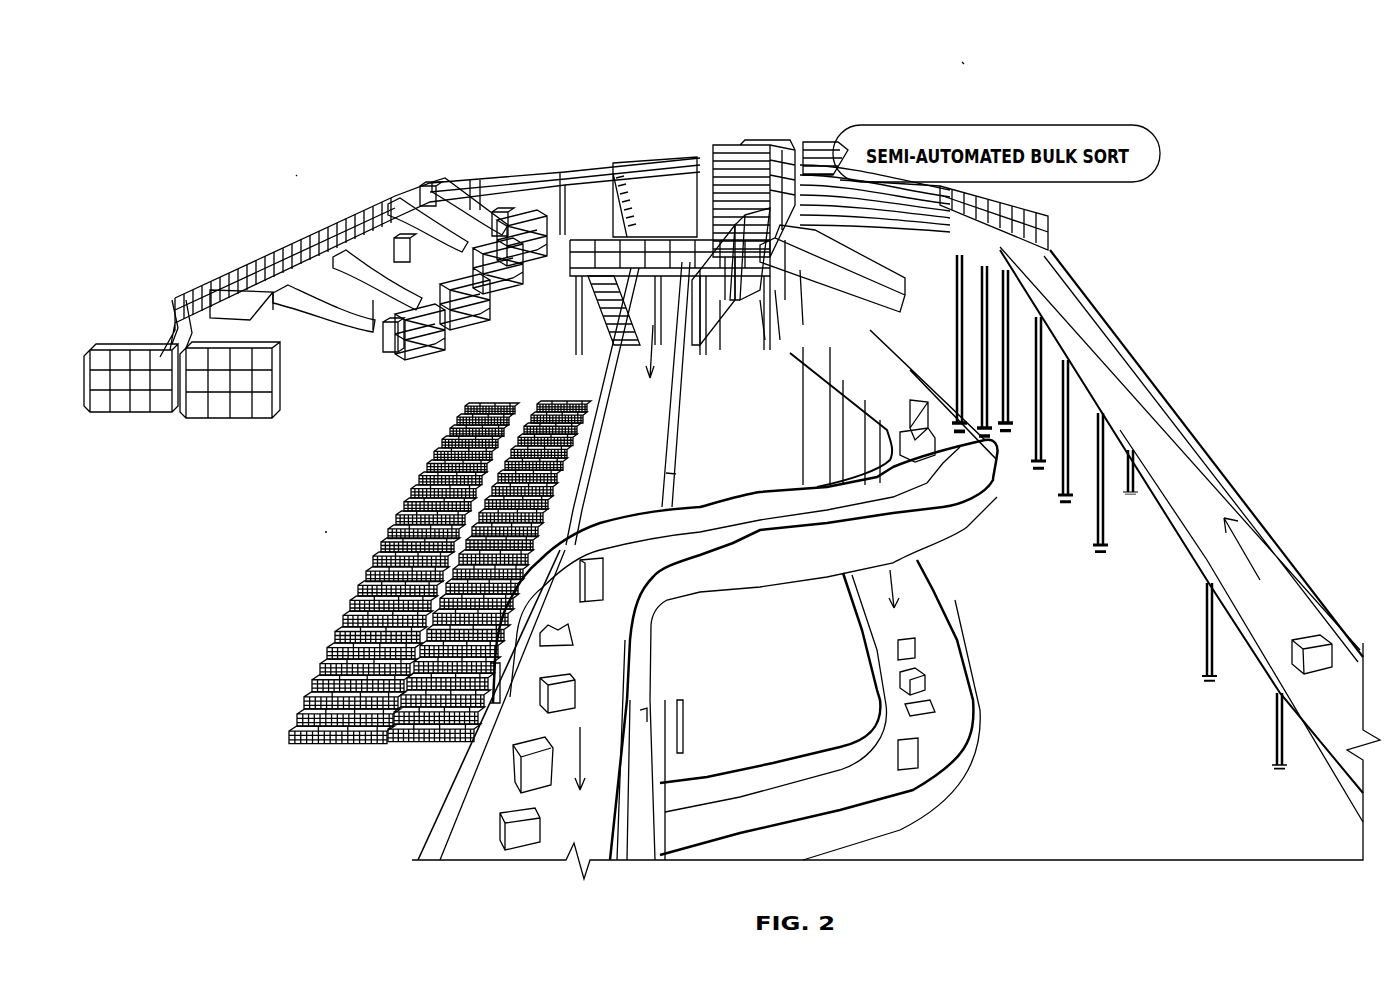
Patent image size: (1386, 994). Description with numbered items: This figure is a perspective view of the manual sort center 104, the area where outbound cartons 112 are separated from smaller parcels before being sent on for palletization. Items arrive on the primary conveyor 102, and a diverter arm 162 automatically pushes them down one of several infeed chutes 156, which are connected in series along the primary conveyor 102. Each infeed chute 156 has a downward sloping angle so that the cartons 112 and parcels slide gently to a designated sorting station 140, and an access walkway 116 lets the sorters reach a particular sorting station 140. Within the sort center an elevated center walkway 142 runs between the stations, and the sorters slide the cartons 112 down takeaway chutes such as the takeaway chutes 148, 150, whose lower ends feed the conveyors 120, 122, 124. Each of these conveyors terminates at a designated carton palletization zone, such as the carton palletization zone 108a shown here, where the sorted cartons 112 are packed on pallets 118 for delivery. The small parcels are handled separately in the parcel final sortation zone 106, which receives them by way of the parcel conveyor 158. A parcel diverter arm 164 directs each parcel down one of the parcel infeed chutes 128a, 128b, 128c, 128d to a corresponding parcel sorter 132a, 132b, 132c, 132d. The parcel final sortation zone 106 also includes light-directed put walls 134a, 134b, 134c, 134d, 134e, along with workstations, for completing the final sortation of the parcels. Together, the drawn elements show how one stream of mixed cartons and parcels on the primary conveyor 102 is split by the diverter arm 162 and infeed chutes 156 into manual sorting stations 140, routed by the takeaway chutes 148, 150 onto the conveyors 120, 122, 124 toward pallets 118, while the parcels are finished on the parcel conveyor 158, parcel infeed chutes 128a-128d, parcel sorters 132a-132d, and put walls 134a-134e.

The primary conveyor 102 is at (1237, 532).
The manual sort center 104 is at (974, 60).
The parcel final sortation zone 106 is at (290, 167).
The carton palletization zone 108a is at (316, 538).
The carton 112 is at (1307, 634).
The access walkway 116 is at (657, 190).
The pallet 118 is at (420, 493).
The conveyor 120 is at (977, 520).
The conveyor 122 is at (982, 750).
The conveyor 124 is at (660, 407).
The parcel infeed chute 128a is at (333, 318).
The parcel infeed chute 128b is at (345, 260).
The parcel infeed chute 128c is at (393, 200).
The parcel infeed chute 128d is at (447, 200).
The parcel sorter 132a is at (388, 322).
The parcel sorter 132b is at (388, 222).
The parcel sorter 132c is at (423, 188).
The parcel sorter 132d is at (495, 216).
The light-directed put wall 134a is at (462, 337).
The light-directed put wall 134b is at (487, 292).
The light-directed put wall 134c is at (510, 258).
The light-directed put wall 134d is at (540, 238).
The light-directed put wall 134e is at (197, 415).
The sorting station 140 is at (748, 126).
The elevated center walkway 142 is at (763, 303).
The takeaway chute 148 is at (724, 287).
The takeaway chute 150 is at (832, 268).
The infeed chute 156 is at (815, 138).
The parcel conveyor 158 is at (562, 167).
The diverter arm 162 is at (1015, 198).
The parcel diverter arm 164 is at (237, 282).